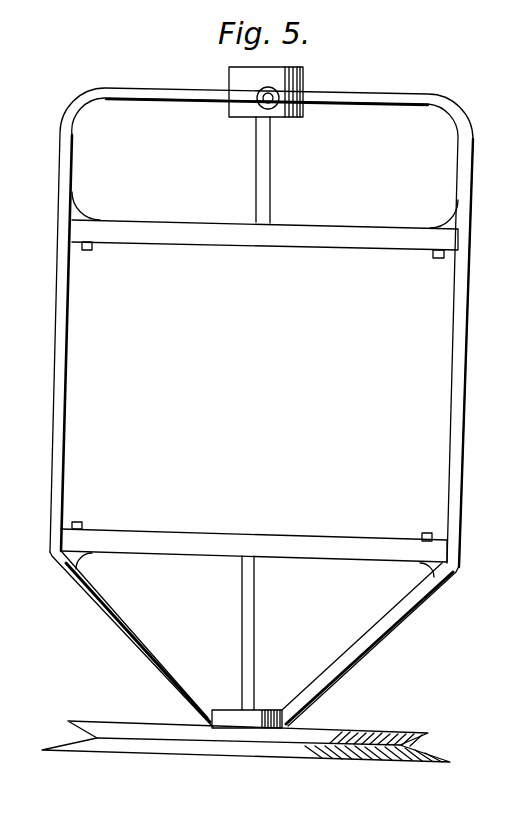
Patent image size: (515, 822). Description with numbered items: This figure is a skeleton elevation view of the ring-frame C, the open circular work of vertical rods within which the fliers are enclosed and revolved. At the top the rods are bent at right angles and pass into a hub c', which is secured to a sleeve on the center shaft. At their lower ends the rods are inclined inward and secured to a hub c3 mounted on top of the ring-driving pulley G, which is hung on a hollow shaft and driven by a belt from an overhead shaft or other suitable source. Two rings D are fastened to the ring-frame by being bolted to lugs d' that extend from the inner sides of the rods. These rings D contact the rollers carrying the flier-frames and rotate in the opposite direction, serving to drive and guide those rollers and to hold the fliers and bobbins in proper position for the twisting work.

The ring-frame C is at (452, 372).
The rings D is at (88, 236).
The lugs d' is at (265, 382).
The hub c' is at (279, 144).
The hub c3 is at (256, 642).
The ring-driving pulley G is at (255, 757).